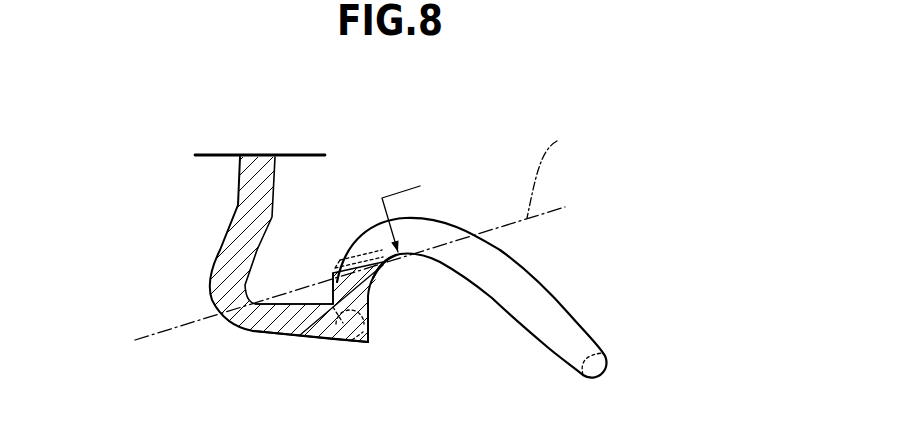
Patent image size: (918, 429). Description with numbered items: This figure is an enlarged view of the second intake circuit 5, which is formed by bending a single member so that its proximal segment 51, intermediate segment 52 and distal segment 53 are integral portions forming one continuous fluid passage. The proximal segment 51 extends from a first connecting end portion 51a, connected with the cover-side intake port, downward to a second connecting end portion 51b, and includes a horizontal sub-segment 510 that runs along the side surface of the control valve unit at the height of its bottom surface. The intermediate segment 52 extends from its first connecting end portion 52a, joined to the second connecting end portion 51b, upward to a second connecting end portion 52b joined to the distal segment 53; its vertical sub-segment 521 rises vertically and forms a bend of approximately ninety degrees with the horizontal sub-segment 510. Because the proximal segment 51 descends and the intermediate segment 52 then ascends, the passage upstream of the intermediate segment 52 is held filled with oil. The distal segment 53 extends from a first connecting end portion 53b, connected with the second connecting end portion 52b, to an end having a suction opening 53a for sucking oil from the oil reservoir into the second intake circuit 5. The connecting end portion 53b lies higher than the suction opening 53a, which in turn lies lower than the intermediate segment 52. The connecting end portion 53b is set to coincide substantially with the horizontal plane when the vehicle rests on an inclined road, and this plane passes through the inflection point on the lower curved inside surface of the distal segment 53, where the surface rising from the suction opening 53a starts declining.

The second intake circuit 5 is at (378, 140).
The proximal segment 51 is at (233, 210).
The first connecting end portion 51a is at (255, 155).
The second connecting end portion 51b is at (335, 342).
The horizontal sub-segment 510 is at (297, 325).
The intermediate segment 52 is at (333, 288).
The first connecting end portion 52a is at (360, 315).
The second connecting end portion 52b is at (370, 257).
The vertical sub-segment 521 is at (372, 295).
The distal segment 53 is at (540, 274).
The suction opening 53a is at (596, 362).
The first connecting end portion 53b is at (378, 276).